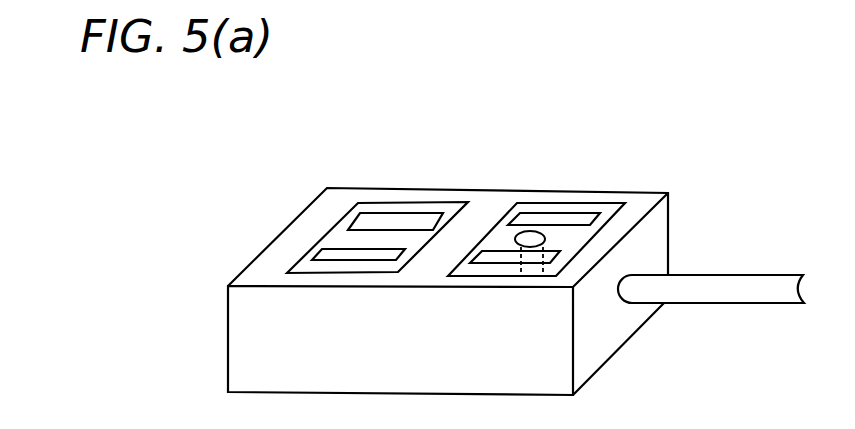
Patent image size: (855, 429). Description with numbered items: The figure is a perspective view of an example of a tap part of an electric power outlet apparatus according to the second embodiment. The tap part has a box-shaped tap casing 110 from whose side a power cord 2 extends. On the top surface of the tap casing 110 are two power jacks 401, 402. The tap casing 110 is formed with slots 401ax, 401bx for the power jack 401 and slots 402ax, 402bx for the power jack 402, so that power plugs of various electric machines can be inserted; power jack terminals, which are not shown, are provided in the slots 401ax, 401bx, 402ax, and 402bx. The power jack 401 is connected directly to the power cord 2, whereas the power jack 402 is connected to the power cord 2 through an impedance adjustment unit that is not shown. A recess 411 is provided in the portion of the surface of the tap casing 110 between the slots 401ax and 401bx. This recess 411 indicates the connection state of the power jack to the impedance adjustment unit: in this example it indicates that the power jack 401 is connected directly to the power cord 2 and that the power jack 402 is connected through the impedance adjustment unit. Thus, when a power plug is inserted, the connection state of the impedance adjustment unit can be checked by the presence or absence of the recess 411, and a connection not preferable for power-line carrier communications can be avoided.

The tap casing 110 is at (668, 193).
The power cord 2 is at (760, 287).
The power jack 402 is at (373, 203).
The slot 402ax is at (393, 223).
The slot 402bx is at (350, 253).
The power jack 401 is at (528, 203).
The slot 401ax is at (553, 218).
The slot 401bx is at (493, 255).
The recess 411 is at (535, 232).